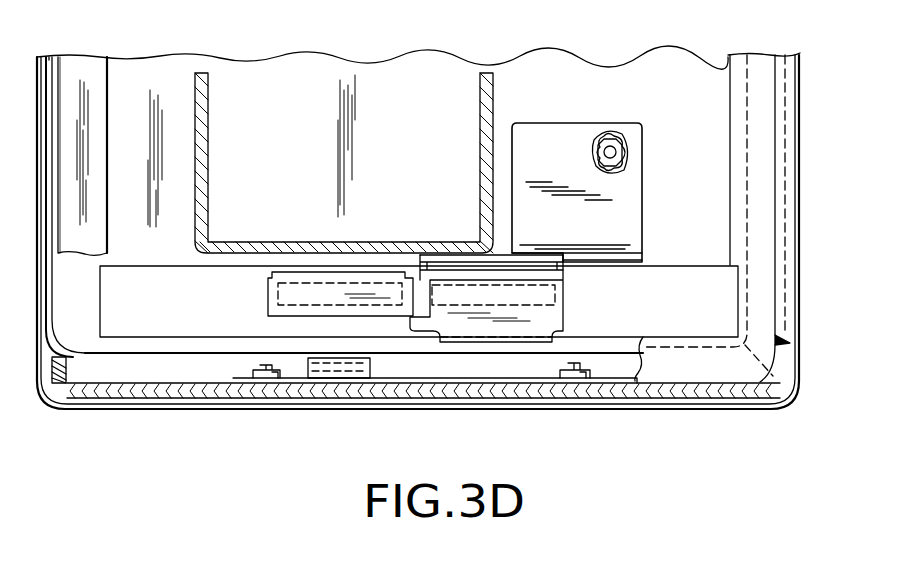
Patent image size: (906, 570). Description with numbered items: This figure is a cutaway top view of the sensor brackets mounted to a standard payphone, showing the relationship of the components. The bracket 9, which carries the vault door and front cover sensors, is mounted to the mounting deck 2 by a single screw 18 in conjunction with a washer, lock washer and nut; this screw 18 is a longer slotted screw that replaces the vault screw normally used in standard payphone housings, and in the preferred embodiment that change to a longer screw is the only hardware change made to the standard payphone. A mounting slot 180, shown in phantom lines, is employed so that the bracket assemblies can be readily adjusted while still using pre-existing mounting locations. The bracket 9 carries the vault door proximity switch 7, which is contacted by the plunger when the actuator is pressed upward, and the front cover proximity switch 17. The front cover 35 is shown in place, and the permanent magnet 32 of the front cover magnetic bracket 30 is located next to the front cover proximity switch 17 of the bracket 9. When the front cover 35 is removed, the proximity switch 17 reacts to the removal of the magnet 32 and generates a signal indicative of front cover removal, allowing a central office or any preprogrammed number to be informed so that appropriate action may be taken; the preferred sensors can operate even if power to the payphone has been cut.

The mounting deck 2 is at (693, 73).
The vault door proximity switch 7 is at (493, 320).
The bracket 9 is at (547, 130).
The front cover proximity switch 17 is at (377, 297).
The screw 18 is at (620, 140).
The front cover magnetic bracket 30 is at (455, 383).
The permanent magnet 32 is at (306, 362).
The front cover 35 is at (180, 408).
The slot 180 is at (633, 164).